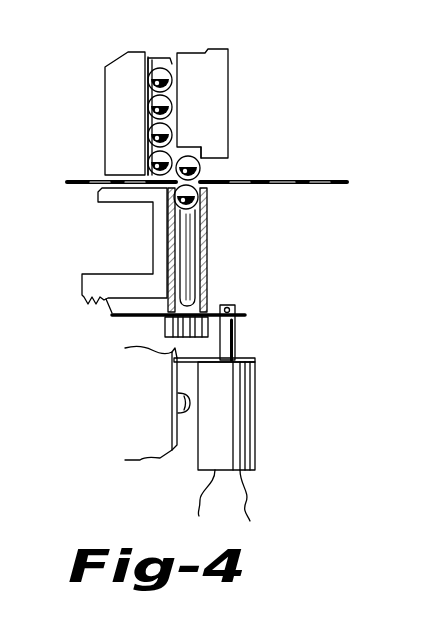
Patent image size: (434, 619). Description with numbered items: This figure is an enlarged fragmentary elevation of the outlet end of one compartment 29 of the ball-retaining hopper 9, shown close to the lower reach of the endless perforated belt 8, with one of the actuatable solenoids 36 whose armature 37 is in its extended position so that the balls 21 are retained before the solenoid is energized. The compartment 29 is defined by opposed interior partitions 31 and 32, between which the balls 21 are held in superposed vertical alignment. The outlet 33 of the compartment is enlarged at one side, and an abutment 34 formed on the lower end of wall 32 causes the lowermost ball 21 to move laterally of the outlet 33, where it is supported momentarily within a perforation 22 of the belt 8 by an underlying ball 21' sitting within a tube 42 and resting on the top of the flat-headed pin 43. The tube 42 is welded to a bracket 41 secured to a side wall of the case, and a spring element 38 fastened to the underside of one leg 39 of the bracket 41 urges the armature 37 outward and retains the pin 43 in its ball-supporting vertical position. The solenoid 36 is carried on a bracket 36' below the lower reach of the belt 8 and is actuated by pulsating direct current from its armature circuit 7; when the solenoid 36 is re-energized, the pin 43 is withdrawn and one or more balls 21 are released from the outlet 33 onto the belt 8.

The compartment 29 is at (158, 60).
The ball-retaining hopper 9 is at (235, 78).
The balls 21 is at (131, 124).
The interior partition 31 is at (110, 128).
The outlet 33 is at (143, 171).
The interior partition 32 is at (223, 112).
The abutment 34 is at (196, 148).
The endless perforated belt 8 is at (318, 186).
The perforation 22 is at (236, 186).
The underlying ball 21' is at (207, 204).
The bracket 41 is at (153, 229).
The tube 42 is at (208, 228).
The pin 43 is at (185, 252).
The leg 39 is at (93, 280).
The spring element 38 is at (133, 316).
The armature 37 is at (237, 335).
The solenoid 36 is at (234, 414).
The bracket 36' is at (156, 403).
The armature circuit 7 is at (237, 503).